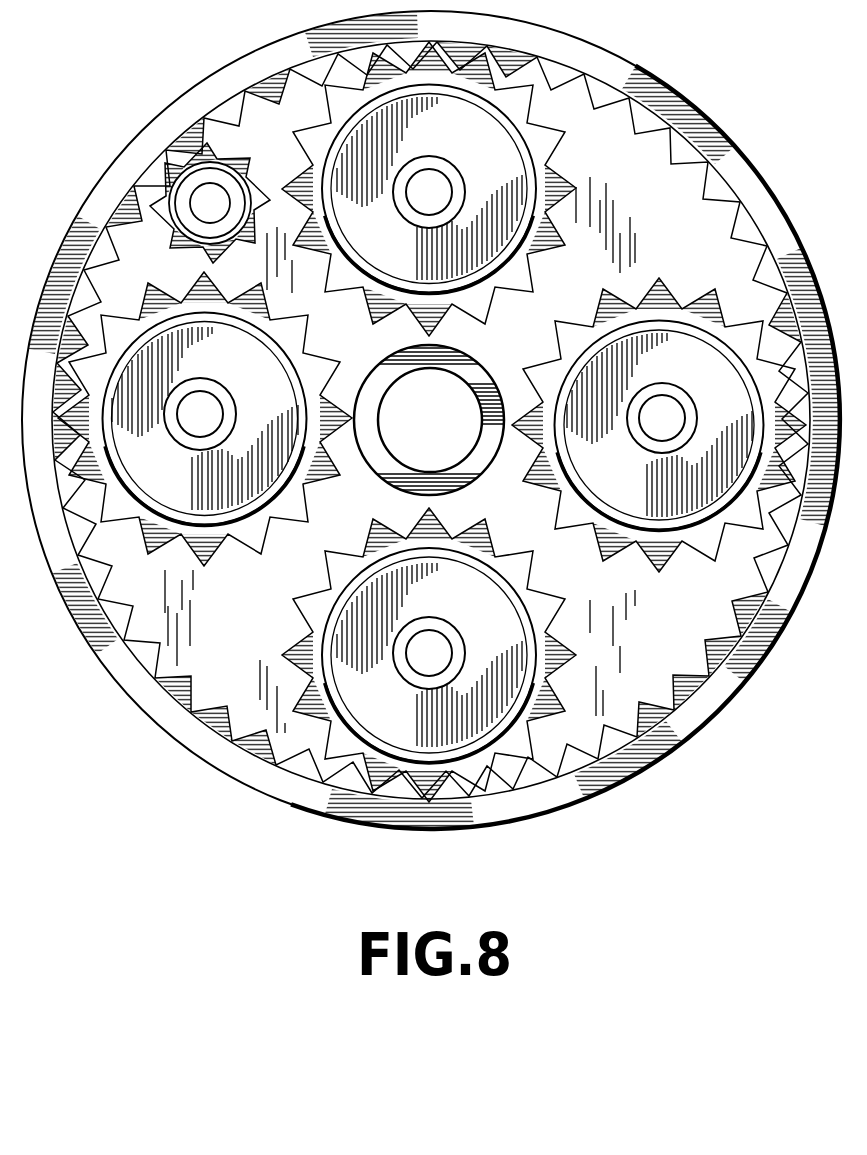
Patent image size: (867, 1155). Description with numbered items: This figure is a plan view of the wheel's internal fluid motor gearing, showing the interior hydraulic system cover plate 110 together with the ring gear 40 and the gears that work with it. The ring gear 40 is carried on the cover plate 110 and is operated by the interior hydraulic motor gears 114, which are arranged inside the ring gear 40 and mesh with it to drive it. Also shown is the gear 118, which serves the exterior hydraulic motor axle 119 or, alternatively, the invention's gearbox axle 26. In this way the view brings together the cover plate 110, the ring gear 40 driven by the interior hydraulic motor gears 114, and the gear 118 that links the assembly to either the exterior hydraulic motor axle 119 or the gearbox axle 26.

The ring gear 40 is at (651, 147).
The interior hydraulic system cover plate 110 is at (276, 604).
The interior hydraulic motor gears 114 is at (397, 227).
The gearbox axle 26 is at (448, 407).
The gear 118 is at (256, 190).
The exterior hydraulic motor axle 119 is at (207, 202).